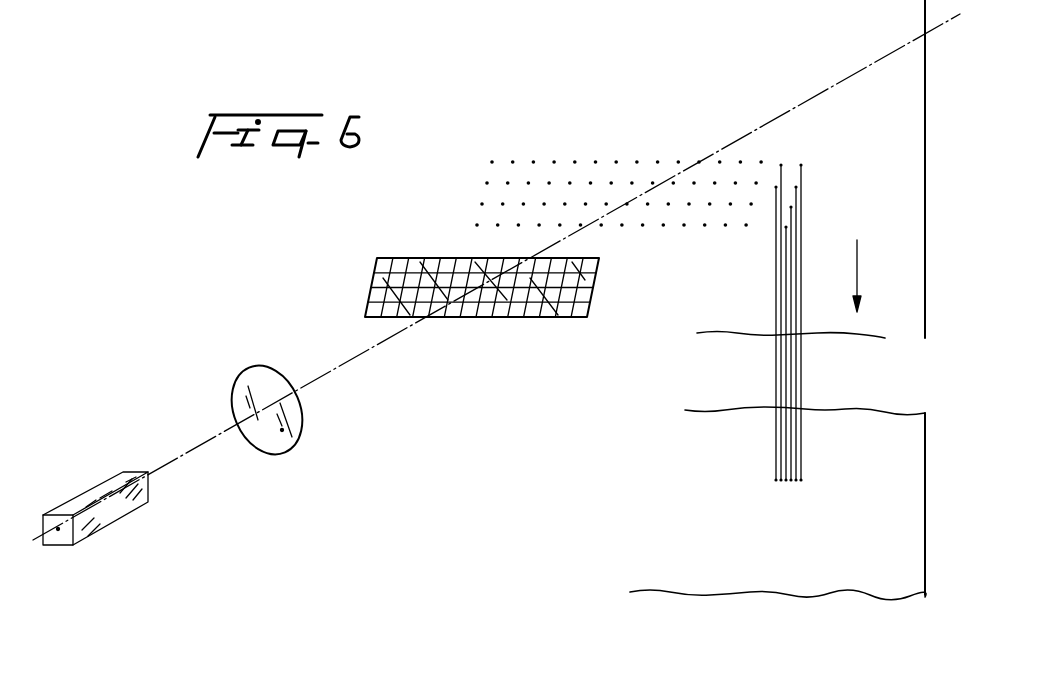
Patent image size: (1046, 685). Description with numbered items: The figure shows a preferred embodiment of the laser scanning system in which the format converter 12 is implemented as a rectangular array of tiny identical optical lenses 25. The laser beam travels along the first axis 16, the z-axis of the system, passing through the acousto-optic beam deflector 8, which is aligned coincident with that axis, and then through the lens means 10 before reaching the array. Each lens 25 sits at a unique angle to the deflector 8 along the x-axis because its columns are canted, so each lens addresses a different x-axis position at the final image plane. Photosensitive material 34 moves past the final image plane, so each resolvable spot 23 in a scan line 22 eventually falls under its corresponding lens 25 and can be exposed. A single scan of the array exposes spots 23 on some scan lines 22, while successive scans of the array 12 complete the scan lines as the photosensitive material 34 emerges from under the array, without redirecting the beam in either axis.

The acousto-optic beam deflector 8 is at (118, 513).
The lens means 10 is at (247, 372).
The format converter 12 is at (598, 312).
The first axis 16 is at (884, 58).
The scan line 22 is at (801, 198).
The resolvable spot 23 is at (801, 165).
The lens 25 is at (395, 258).
The photosensitive material 34 is at (913, 240).